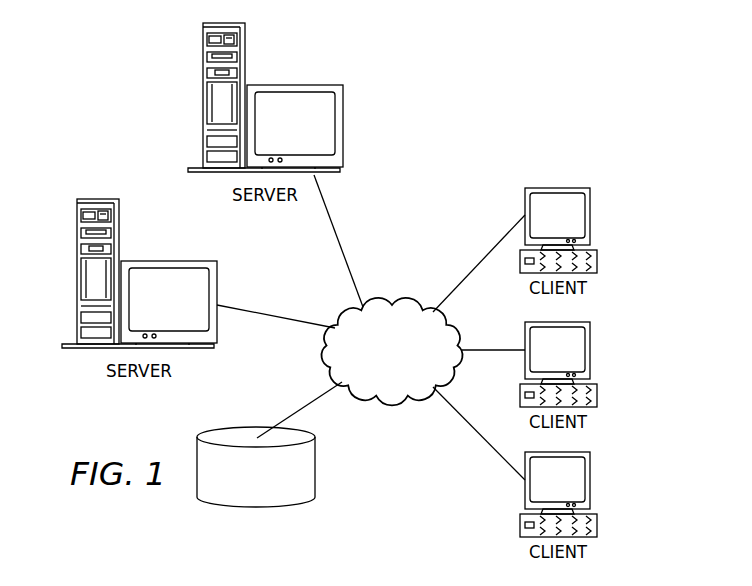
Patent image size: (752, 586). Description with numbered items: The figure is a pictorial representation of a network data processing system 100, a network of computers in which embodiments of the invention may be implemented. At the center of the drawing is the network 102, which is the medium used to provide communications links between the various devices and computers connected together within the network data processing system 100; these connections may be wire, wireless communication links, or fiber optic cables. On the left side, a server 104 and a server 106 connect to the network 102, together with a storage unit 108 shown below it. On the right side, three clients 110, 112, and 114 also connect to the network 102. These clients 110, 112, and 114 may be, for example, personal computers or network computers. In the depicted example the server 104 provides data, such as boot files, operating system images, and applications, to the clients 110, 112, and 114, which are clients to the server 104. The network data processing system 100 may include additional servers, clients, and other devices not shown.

The network data processing system 100 is at (466, 164).
The network 102 is at (390, 304).
The server 104 is at (78, 276).
The server 106 is at (204, 101).
The storage unit 108 is at (237, 508).
The client 110 is at (592, 215).
The client 112 is at (592, 350).
The client 114 is at (592, 479).